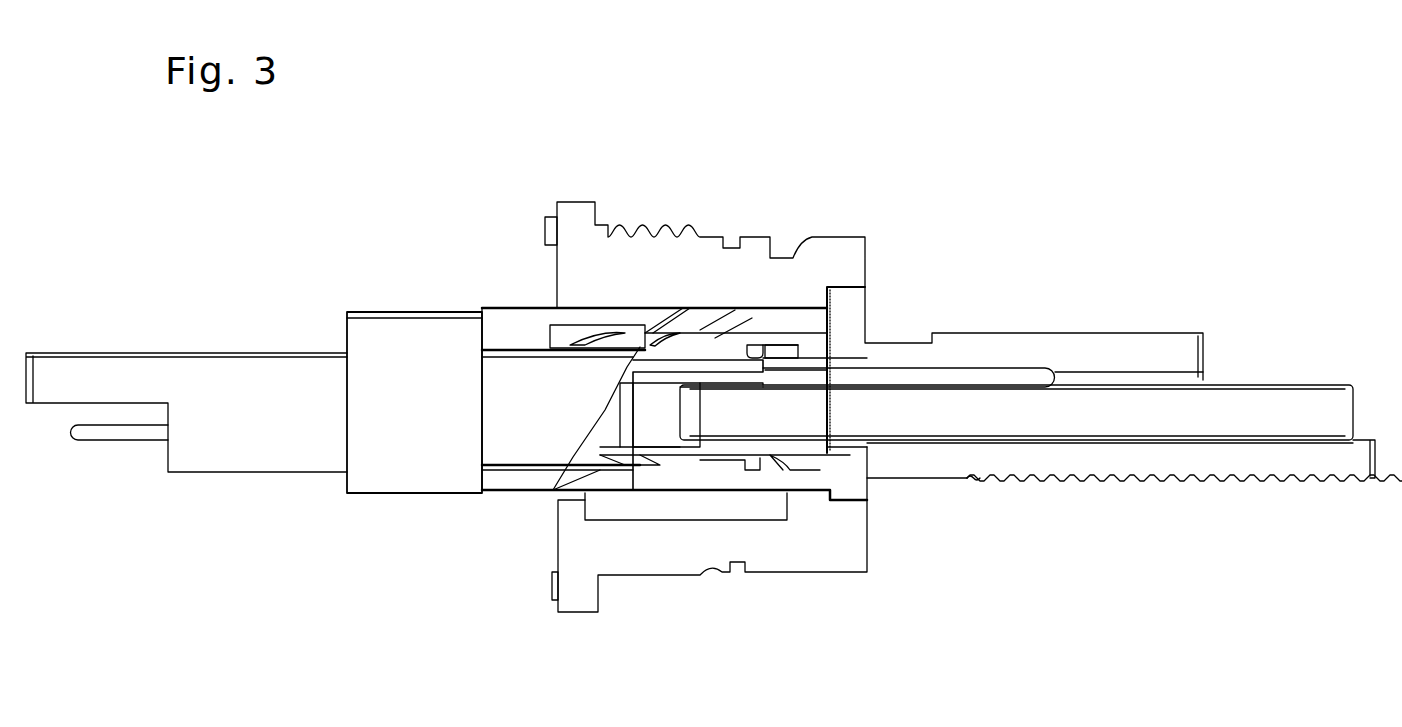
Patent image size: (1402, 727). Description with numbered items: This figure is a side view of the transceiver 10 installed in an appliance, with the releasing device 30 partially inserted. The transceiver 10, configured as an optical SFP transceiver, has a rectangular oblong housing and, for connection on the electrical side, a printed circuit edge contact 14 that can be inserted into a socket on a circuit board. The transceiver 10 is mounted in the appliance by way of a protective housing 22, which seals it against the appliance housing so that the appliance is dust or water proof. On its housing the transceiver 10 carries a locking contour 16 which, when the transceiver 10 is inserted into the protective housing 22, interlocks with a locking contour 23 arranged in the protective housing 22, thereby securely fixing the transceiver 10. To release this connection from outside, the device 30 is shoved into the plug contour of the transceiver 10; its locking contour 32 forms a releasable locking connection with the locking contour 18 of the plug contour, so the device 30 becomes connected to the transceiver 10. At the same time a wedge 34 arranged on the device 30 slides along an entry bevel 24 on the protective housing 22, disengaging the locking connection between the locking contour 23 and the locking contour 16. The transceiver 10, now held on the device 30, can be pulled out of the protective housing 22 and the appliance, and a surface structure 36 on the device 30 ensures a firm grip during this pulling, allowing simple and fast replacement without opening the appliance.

The transceiver 10 is at (262, 395).
The printed circuit edge contact 14 is at (97, 433).
The locking contour 16 is at (613, 463).
The locking contour 18 is at (753, 358).
The protective housing 22 is at (420, 343).
The locking contour 23 is at (620, 460).
The entry bevel 24 is at (737, 460).
The device 30 is at (1312, 407).
The locking contour 32 is at (788, 352).
The wedge 34 is at (783, 470).
The surface structure 36 is at (1187, 478).